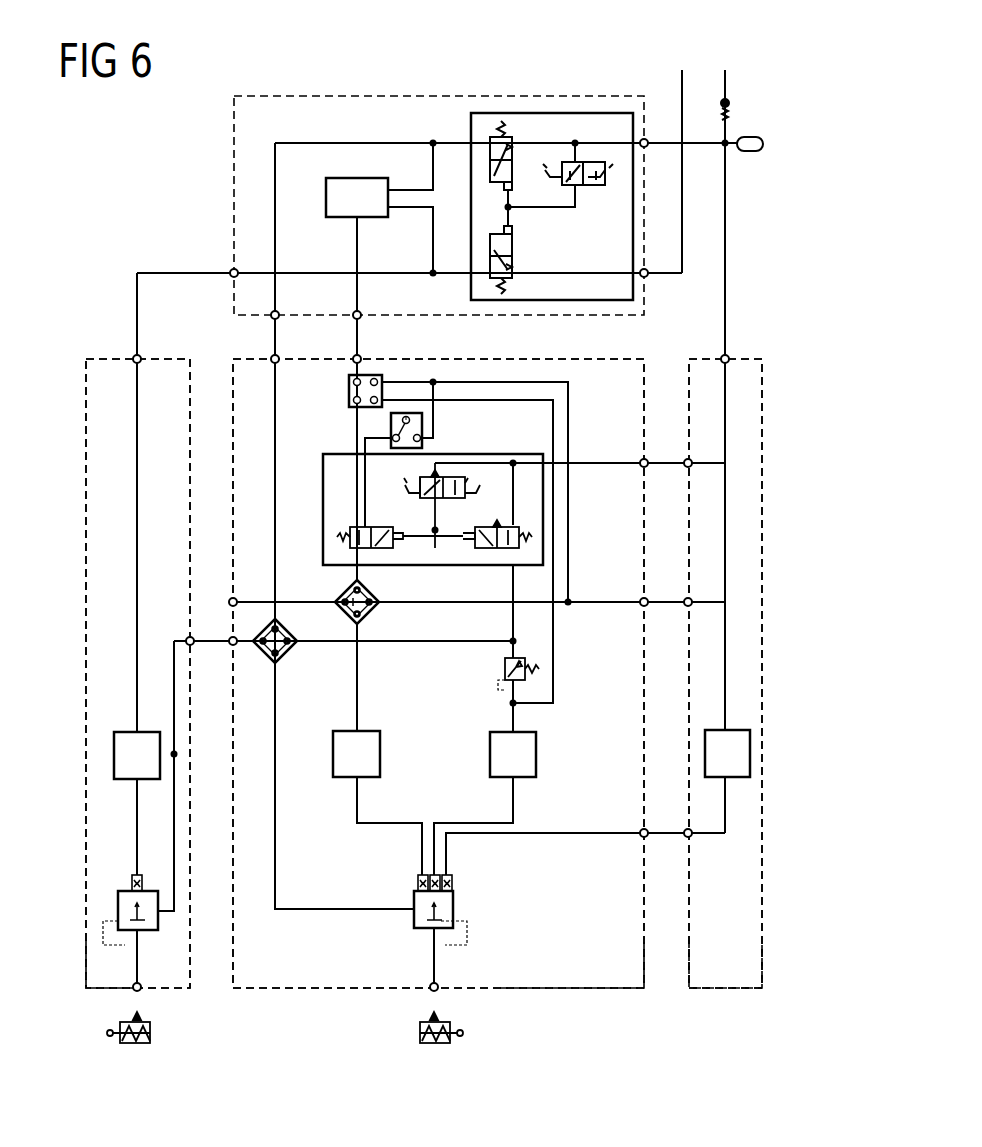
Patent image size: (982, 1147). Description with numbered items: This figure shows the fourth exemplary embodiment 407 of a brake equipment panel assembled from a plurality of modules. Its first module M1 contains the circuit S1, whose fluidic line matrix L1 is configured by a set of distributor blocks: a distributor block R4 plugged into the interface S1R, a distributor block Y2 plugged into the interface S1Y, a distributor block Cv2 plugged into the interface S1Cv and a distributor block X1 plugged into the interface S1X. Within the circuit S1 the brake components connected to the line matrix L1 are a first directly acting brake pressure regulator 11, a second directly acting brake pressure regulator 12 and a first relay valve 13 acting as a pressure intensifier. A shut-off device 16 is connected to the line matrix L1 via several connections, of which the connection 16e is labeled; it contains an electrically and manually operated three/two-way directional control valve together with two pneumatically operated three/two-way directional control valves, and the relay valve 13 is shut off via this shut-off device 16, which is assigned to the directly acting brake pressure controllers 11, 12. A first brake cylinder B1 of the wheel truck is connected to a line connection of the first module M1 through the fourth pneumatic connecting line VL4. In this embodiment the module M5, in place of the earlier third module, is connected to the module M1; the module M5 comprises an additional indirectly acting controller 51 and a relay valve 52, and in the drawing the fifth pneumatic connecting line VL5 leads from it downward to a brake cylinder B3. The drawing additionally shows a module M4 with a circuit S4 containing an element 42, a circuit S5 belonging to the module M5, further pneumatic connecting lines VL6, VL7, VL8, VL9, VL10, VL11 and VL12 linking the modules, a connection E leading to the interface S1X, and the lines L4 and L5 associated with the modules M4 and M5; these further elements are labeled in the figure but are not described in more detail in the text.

The brake equipment panel embodiment 407 is at (147, 240).
The connecting line VL6 is at (352, 326).
The distributor block Y2 is at (371, 375).
The connecting line VL7 is at (272, 338).
The input E is at (406, 412).
The interface S1Y is at (343, 388).
The distributor block X1 is at (391, 425).
The interface S1X is at (432, 437).
The connecting line VL12 is at (648, 463).
The shut-off device 16 is at (323, 505).
The connection 16e is at (365, 455).
The fifth module S5 is at (108, 550).
The connecting line VL8 is at (233, 600).
The interface S1Cv is at (384, 597).
The connecting line VL11 is at (648, 602).
The fourth line L4 is at (708, 602).
The fifth line L5 is at (134, 662).
The connecting line VL9 is at (210, 645).
The distributor block R4 is at (295, 652).
The distributor block Cv2 is at (370, 616).
The interface S1R is at (300, 668).
The indirectly acting controller 51 is at (114, 754).
The second directly acting brake pressure regulator 12 is at (380, 755).
The first directly acting brake pressure regulator 11 is at (537, 755).
The control element 42 is at (705, 755).
The connecting line VL10 is at (648, 834).
The relay valve 52 is at (118, 902).
The first relay valve 13 is at (453, 898).
The circuit S1 is at (570, 884).
The fourth module S4 is at (702, 884).
The module M5 is at (86, 965).
The fifth pneumatic connecting line VL5 is at (135, 1008).
The brake actuator B3 is at (152, 1035).
The fluidic line matrix L1 is at (323, 911).
The first brake cylinder B1 is at (420, 1036).
The fourth pneumatic connecting line VL4 is at (440, 1002).
The first module M1 is at (566, 990).
The fourth module M4 is at (710, 990).